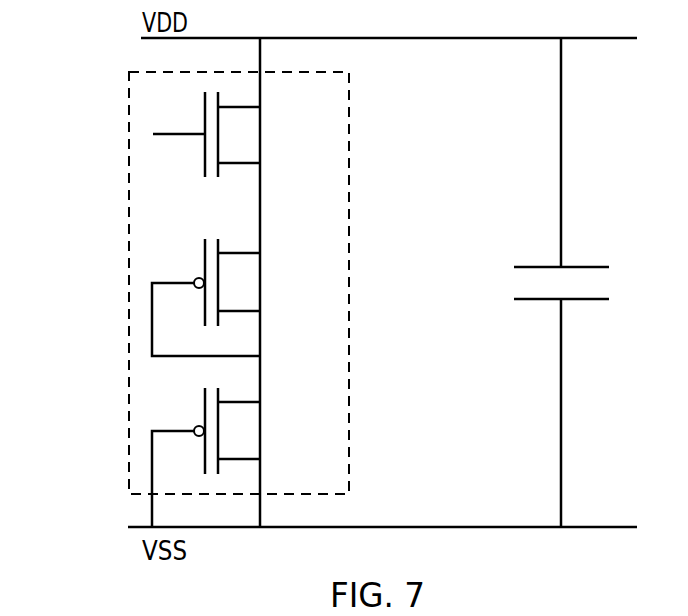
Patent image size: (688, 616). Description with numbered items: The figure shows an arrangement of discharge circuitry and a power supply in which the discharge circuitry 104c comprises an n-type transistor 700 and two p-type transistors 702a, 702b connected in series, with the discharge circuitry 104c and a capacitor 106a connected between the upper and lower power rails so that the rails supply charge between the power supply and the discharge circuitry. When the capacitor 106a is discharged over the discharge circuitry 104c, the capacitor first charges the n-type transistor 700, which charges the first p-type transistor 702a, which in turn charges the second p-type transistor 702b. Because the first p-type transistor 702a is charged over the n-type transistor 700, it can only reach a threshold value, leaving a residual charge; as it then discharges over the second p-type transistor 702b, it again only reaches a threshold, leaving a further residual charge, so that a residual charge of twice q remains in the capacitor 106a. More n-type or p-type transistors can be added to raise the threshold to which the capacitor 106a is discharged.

The n-type transistor 700 is at (203, 118).
The first p-type transistor 702a is at (203, 262).
The second p-type transistor 702b is at (203, 411).
The discharge circuitry 104c is at (350, 117).
The capacitor 106a is at (607, 243).